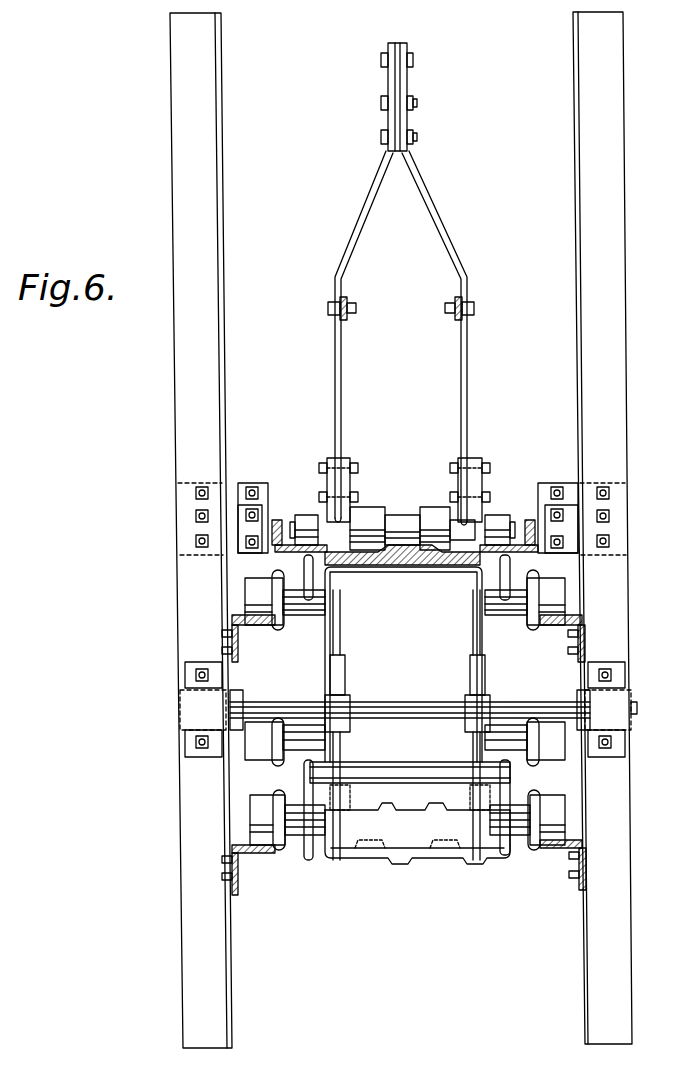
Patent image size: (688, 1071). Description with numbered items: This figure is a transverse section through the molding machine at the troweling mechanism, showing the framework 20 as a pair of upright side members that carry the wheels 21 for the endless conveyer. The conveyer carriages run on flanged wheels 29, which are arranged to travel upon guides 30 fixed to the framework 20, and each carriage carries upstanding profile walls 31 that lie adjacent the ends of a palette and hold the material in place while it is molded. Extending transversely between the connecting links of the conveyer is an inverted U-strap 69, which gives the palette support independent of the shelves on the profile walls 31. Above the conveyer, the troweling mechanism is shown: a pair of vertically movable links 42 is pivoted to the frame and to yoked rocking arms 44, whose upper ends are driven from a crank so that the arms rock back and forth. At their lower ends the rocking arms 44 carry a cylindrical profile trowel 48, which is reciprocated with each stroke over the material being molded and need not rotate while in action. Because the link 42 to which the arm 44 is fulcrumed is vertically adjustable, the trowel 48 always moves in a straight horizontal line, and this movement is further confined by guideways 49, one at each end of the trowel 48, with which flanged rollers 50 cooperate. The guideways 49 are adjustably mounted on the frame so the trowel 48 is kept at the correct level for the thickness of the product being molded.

The framework 20 is at (222, 923).
The wheels 21 is at (346, 678).
The flanged wheels 29 is at (555, 586).
The guides 30 is at (258, 627).
The profile walls 31 is at (421, 860).
The links 42 is at (445, 308).
The rocking arms 44 is at (461, 399).
The cylindrical profile trowel 48 is at (372, 512).
The guideways 49 is at (289, 538).
The flanged rollers 50 is at (307, 522).
The inverted U-straps 69 is at (405, 575).